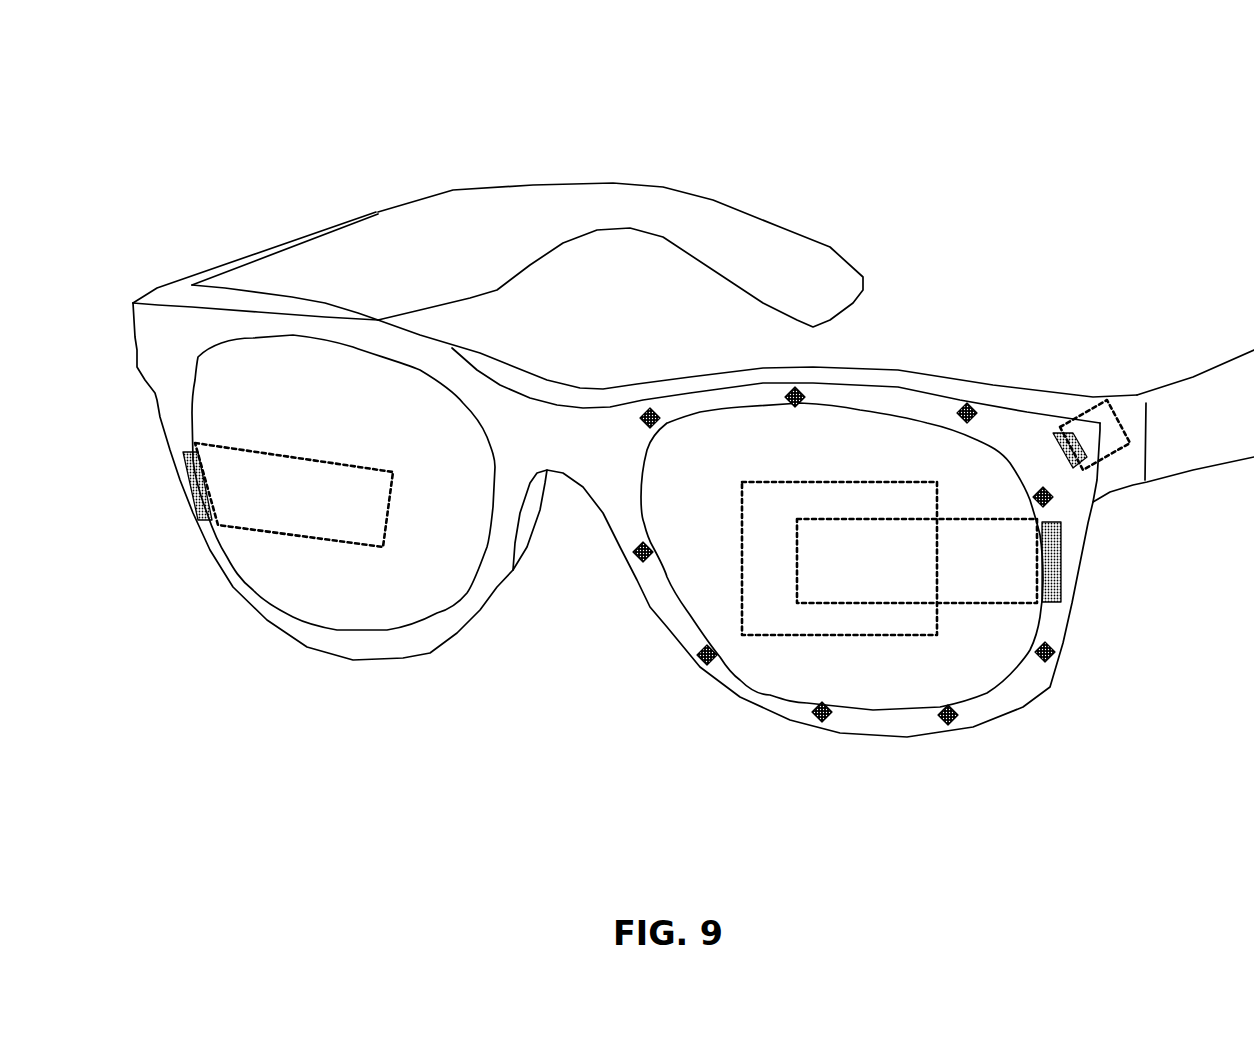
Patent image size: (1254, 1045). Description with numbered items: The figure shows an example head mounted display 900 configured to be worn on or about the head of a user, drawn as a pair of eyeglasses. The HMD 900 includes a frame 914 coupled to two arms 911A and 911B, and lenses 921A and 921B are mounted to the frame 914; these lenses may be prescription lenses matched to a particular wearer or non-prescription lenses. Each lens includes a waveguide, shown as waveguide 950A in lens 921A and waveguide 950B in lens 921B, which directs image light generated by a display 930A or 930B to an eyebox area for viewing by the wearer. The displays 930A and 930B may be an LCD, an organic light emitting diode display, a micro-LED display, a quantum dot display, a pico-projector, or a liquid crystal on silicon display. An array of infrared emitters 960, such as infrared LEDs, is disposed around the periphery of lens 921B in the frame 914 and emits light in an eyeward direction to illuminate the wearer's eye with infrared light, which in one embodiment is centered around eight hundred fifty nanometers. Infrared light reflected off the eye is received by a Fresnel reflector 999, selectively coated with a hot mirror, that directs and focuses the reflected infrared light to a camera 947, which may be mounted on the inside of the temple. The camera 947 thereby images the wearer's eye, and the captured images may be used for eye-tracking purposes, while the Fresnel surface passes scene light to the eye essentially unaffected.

The head mounted display 900 is at (1177, 52).
The arm 911A is at (433, 268).
The arm 911B is at (1173, 436).
The frame 914 is at (152, 347).
The lens 921A is at (414, 523).
The lens 921B is at (826, 443).
The display 930A is at (193, 492).
The display 930B is at (1060, 567).
The camera 947 is at (1110, 410).
The waveguide 950A is at (227, 447).
The waveguide 950B is at (1037, 603).
The infrared emitters 960 is at (942, 705).
The Fresnel reflector 999 is at (740, 523).